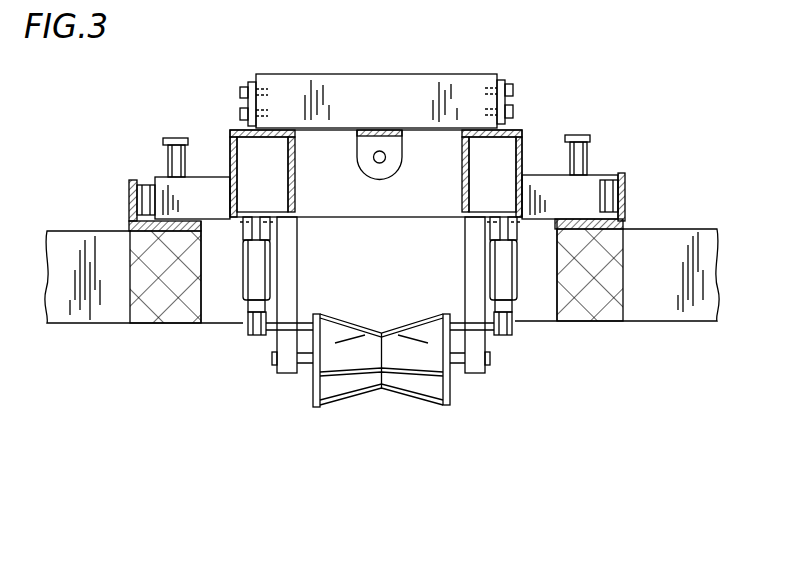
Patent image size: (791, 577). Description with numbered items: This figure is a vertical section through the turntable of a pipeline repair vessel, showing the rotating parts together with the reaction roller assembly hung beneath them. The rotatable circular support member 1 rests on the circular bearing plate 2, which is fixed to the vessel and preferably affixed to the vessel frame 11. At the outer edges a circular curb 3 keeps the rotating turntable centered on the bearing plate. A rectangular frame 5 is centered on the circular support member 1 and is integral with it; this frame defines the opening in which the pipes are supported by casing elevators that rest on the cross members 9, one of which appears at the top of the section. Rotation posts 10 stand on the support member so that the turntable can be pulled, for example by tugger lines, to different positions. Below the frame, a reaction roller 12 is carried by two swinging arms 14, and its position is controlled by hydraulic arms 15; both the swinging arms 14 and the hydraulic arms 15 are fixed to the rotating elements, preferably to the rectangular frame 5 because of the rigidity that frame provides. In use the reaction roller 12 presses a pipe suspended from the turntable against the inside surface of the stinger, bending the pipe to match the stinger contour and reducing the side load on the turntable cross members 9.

The circular support member 1 is at (535, 173).
The circular bearing plate 2 is at (603, 231).
The circular curb 3 is at (628, 190).
The rectangular frame 5 is at (520, 127).
The cross members 9 is at (475, 73).
The rotation posts 10 is at (165, 158).
The vessel frame 11 is at (629, 304).
The reaction roller 12 is at (408, 406).
The swinging arms 14 is at (275, 341).
The hydraulic arms 15 is at (238, 283).